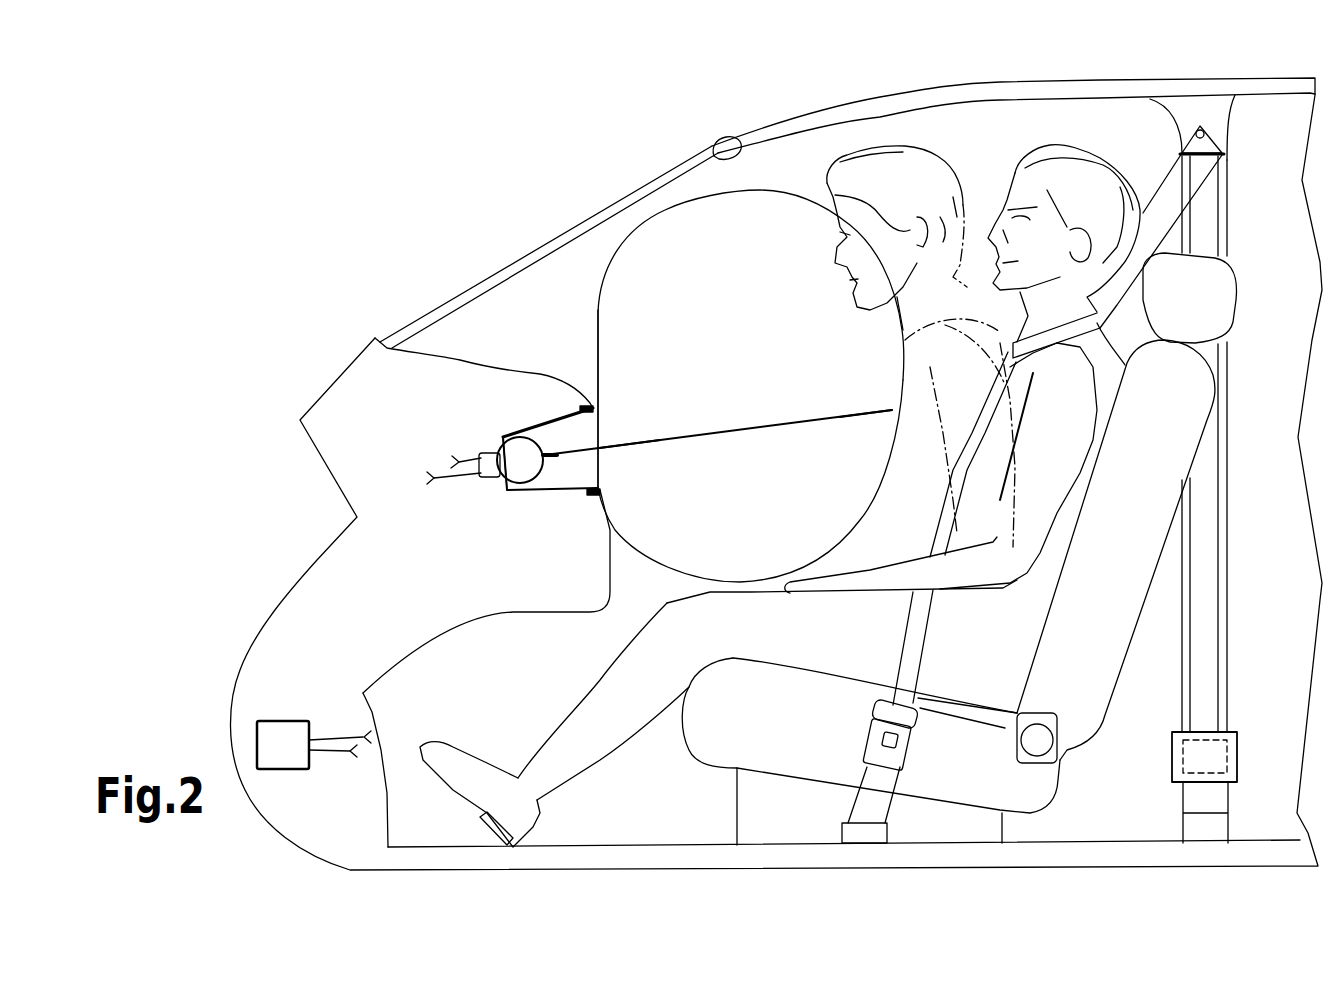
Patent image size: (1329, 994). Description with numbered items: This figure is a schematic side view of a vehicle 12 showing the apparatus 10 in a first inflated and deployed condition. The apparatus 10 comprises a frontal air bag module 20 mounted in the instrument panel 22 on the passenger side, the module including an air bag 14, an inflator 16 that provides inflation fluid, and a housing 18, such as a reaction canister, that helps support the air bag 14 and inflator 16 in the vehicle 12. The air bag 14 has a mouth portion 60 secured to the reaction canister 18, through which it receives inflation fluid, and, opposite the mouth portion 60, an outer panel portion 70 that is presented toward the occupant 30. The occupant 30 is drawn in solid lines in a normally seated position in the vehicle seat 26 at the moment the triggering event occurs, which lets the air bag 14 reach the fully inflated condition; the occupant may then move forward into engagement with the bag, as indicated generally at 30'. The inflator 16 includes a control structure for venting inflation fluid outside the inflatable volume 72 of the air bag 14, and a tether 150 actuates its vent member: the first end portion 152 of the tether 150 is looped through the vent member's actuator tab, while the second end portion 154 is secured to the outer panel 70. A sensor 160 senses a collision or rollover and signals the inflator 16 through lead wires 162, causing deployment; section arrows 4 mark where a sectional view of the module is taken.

The section line 4- 4 is at (420, 474).
The apparatus 10 is at (450, 368).
The vehicle 12 is at (538, 177).
The air bag 14 is at (697, 200).
The inflator 16 is at (516, 452).
The housing 18 is at (507, 493).
The frontal air bag module 20 is at (506, 515).
The instrument panel 22 is at (587, 585).
The vehicle seat 26 is at (1127, 557).
The occupant 30 is at (821, 435).
The occupant in displaced position 30' is at (921, 287).
The mouth portion 60 is at (759, 316).
The outer panel portion 70 is at (877, 488).
The inflatable volume 72 is at (730, 237).
The tether 150 is at (718, 389).
The first end portion 152 is at (622, 443).
The second end portion 154 is at (877, 412).
The sensor 160 is at (277, 740).
The lead wires 162 is at (338, 742).